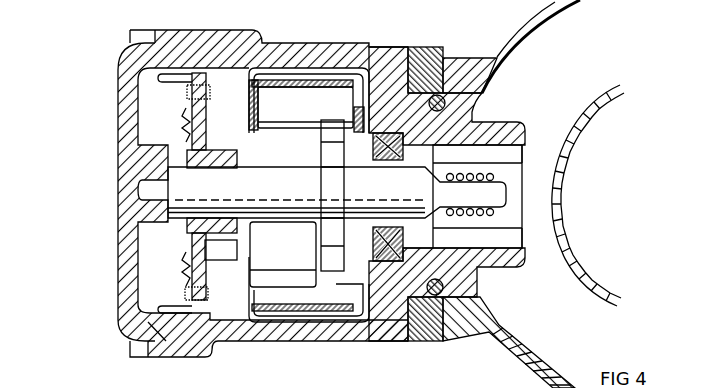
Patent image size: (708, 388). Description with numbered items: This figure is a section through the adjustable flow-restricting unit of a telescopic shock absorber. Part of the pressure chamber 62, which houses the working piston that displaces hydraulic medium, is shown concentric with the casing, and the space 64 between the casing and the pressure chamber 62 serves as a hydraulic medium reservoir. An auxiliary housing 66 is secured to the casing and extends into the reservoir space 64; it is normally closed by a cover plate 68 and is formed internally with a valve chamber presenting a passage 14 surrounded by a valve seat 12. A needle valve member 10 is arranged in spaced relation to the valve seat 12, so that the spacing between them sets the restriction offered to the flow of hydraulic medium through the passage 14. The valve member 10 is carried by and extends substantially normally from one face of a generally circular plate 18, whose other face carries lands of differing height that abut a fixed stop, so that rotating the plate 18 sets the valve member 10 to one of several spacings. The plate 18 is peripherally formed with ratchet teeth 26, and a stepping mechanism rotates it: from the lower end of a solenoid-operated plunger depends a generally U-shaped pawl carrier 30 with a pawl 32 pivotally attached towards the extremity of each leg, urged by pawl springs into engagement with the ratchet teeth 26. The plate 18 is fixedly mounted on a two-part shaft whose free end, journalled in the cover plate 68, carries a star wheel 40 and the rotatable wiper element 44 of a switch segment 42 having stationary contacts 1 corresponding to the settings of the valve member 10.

The stationary switch contact 1 is at (168, 78).
The needle valve member 10 is at (420, 232).
The valve seat 12 is at (523, 258).
The passage 14 is at (477, 225).
The circular plate 18 is at (385, 250).
The ratchet teeth 26 is at (330, 271).
The pawl carrier 30 is at (333, 67).
The pawl 32 is at (269, 113).
The star wheel 40 is at (259, 341).
The switch segment 42 is at (178, 245).
The wiper element 44 is at (183, 140).
The pressure chamber 62 is at (626, 91).
The reservoir space 64 is at (600, 53).
The auxiliary housing 66 is at (296, 77).
The cover plate 68 is at (125, 112).